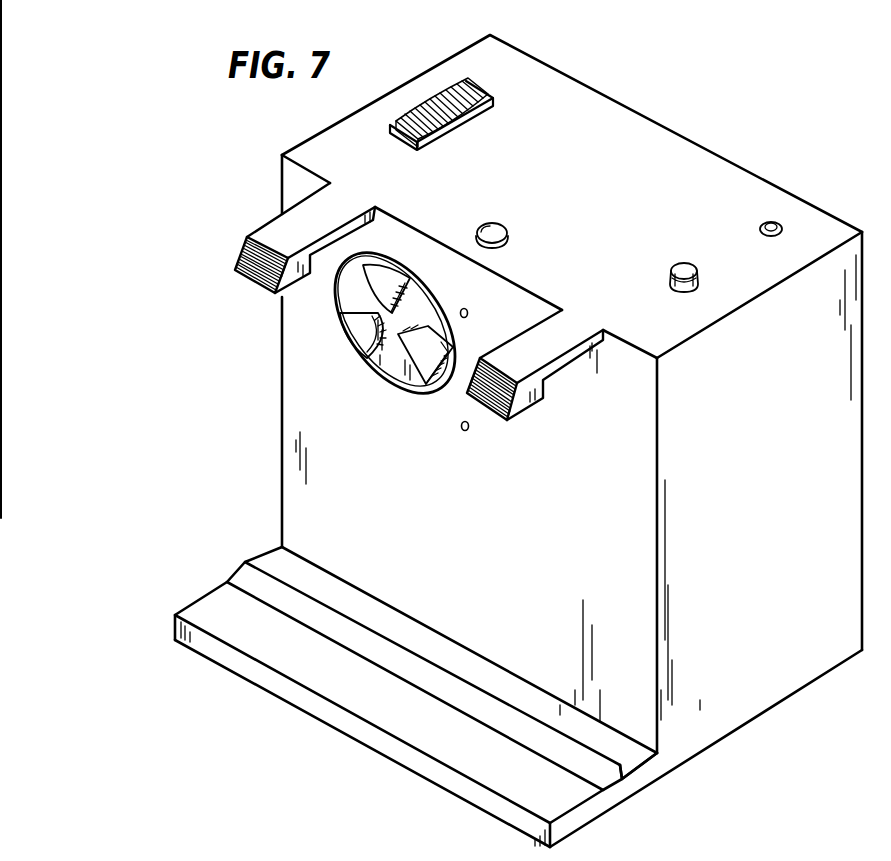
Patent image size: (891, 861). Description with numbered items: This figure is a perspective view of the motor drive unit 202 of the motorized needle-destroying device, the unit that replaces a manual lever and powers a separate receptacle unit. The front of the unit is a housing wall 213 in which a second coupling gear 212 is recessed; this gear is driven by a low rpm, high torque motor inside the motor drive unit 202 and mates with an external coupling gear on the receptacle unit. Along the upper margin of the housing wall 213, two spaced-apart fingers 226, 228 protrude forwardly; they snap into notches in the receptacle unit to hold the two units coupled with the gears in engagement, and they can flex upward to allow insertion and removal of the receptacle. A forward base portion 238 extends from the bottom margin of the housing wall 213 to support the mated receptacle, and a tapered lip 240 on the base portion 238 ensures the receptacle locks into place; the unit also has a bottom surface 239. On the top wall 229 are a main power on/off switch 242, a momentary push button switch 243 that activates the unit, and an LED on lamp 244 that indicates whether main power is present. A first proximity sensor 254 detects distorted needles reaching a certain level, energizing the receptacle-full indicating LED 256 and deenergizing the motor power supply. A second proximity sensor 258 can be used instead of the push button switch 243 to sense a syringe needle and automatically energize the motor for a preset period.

The motor drive unit 202 is at (706, 539).
The second coupling gear 212 is at (357, 333).
The housing wall 213 is at (471, 536).
The finger 226 is at (527, 350).
The finger 228 is at (295, 222).
The top wall 229 is at (681, 166).
The forward base portion 238 is at (253, 622).
The bottom surface 239 is at (760, 718).
The tapered lip 240 is at (623, 773).
The main power on/off switch 242 is at (457, 100).
The momentary push button switch 243 is at (692, 266).
The LED "on" lamp 244 is at (493, 223).
The first proximity sensor 254 is at (465, 431).
The "receptacle-full" indicating LED 256 is at (772, 221).
The second proximity sensor 258 is at (468, 316).